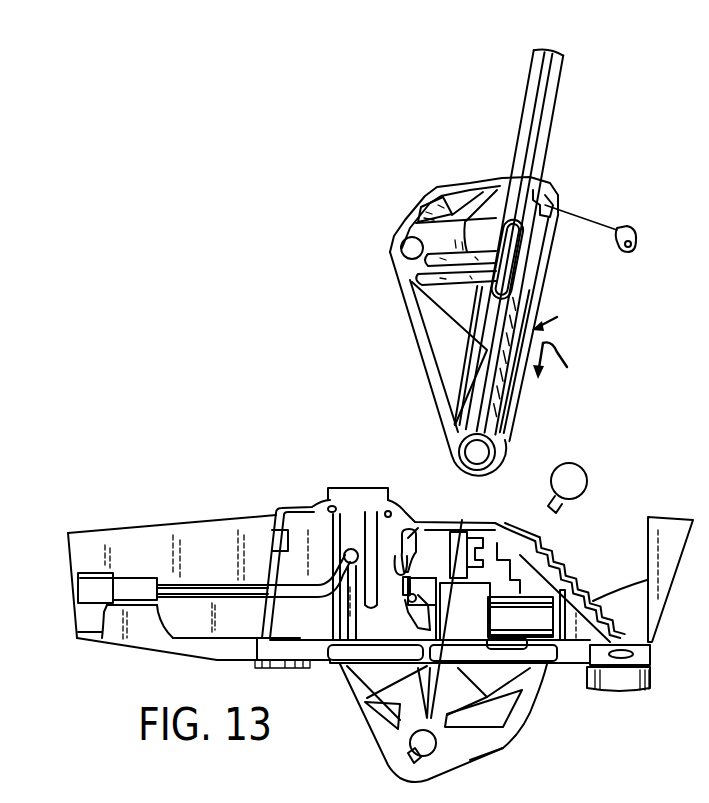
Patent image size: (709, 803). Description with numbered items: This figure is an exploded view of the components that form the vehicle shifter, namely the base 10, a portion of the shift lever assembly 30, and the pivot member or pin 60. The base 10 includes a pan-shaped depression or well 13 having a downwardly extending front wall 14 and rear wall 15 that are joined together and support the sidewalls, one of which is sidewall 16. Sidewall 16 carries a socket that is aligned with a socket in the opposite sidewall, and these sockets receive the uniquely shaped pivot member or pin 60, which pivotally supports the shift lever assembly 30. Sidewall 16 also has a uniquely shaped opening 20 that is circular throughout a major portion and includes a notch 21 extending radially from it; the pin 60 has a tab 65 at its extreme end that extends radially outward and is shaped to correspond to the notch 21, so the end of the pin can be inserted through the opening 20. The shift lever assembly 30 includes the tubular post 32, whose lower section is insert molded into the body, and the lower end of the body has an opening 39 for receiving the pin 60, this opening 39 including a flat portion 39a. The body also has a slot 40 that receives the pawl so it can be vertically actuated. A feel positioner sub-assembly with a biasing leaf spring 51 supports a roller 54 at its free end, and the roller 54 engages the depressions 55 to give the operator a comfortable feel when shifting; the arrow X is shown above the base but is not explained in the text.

The base 10 is at (140, 478).
The pan-shaped depression or well 13 is at (455, 755).
The front wall 14 is at (378, 736).
The rear wall 15 is at (503, 747).
The sidewall 16 is at (480, 748).
The opening 20 is at (430, 776).
The notch 21 is at (392, 765).
The shift lever assembly 30 is at (401, 194).
The tubular post 32 is at (555, 102).
The opening 39 is at (456, 467).
The flat portion 39a is at (490, 446).
The slot 40 is at (506, 274).
The biasing leaf spring 51 is at (591, 222).
The roller 54 is at (622, 262).
The depressions 55 is at (558, 573).
The pivot member or pin 60 is at (587, 479).
The tab 65 is at (547, 520).
The direction of movement X is at (558, 350).